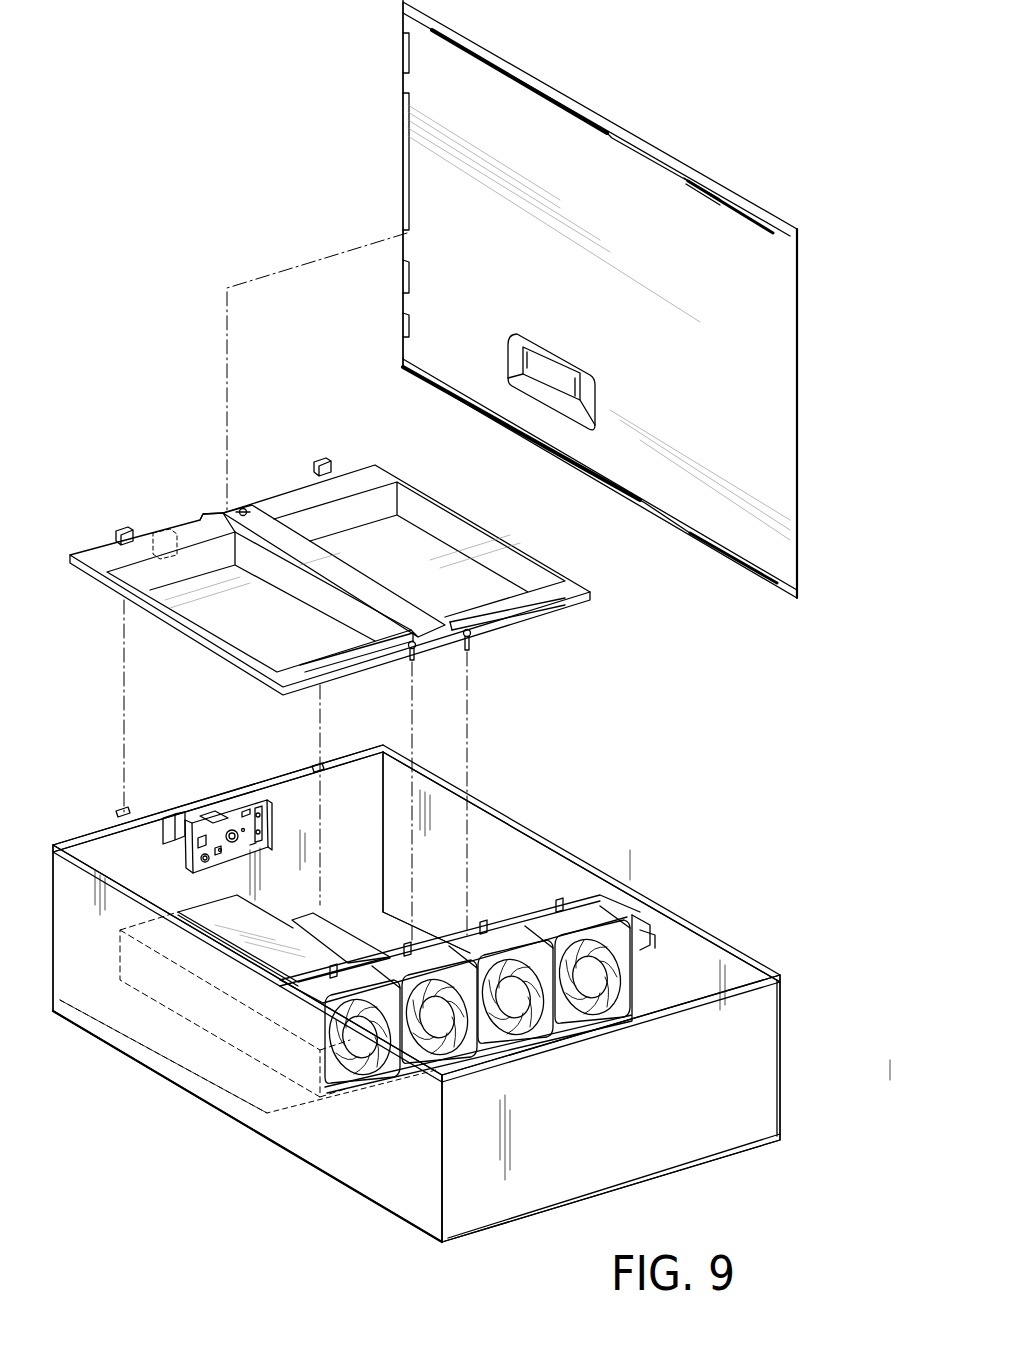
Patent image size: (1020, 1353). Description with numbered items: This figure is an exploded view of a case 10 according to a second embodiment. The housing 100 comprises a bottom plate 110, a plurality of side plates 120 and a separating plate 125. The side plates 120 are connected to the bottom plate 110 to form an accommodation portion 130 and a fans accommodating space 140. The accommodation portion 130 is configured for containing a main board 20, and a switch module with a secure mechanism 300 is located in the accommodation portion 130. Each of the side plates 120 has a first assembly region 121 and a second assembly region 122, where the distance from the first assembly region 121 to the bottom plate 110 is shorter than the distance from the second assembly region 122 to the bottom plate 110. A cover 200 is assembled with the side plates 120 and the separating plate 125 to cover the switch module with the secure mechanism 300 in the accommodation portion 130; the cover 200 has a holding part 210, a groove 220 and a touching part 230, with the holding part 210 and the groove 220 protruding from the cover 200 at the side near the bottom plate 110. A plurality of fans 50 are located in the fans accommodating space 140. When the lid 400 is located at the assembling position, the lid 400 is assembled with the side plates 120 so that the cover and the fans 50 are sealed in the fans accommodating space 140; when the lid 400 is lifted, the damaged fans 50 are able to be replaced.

The case 10 is at (137, 98).
The main board 20 is at (330, 936).
The fans 50 is at (245, 930).
The housing 100 is at (590, 793).
The bottom plate 110 is at (388, 935).
The side plates 120 is at (503, 878).
The first assembly region 121 is at (128, 810).
The second assembly region 122 is at (283, 768).
The separating plate 125 is at (548, 905).
The accommodation portion 130 is at (128, 862).
The fans accommodating space 140 is at (680, 970).
The cover 200 is at (558, 648).
The holding part 210 is at (152, 540).
The groove 220 is at (195, 518).
The touching part 230 is at (244, 508).
The switch module with a secure mechanism 300 is at (300, 825).
The lid 400 is at (645, 106).